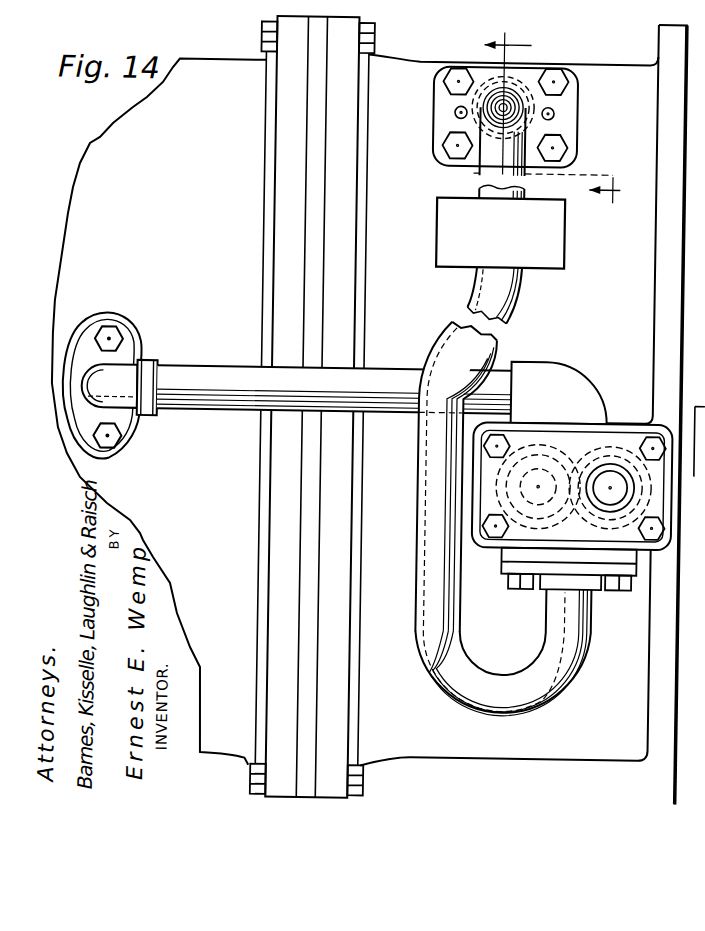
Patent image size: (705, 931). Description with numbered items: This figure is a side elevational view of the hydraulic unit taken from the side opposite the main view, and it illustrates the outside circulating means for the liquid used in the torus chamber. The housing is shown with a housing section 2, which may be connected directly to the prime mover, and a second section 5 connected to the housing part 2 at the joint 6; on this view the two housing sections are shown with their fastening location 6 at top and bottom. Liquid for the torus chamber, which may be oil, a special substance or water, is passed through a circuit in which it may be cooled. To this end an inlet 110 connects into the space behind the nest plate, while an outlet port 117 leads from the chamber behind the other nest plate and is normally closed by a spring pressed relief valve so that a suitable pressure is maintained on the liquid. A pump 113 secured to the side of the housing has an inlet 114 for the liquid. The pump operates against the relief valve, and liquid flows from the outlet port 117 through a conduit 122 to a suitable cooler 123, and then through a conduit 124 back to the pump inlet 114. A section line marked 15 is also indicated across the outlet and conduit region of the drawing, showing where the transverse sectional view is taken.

The housing section 2 is at (399, 72).
The second housing section 5 is at (204, 62).
The connection between housing sections 6 is at (370, 40).
The section line 15- 15 is at (561, 114).
The inlet 110 is at (111, 414).
The pump 113 is at (580, 437).
The pump inlet 114 is at (581, 580).
The outlet port 117 is at (509, 96).
The conduit 122 is at (472, 171).
The cooler 123 is at (445, 233).
The conduit 124 is at (447, 347).